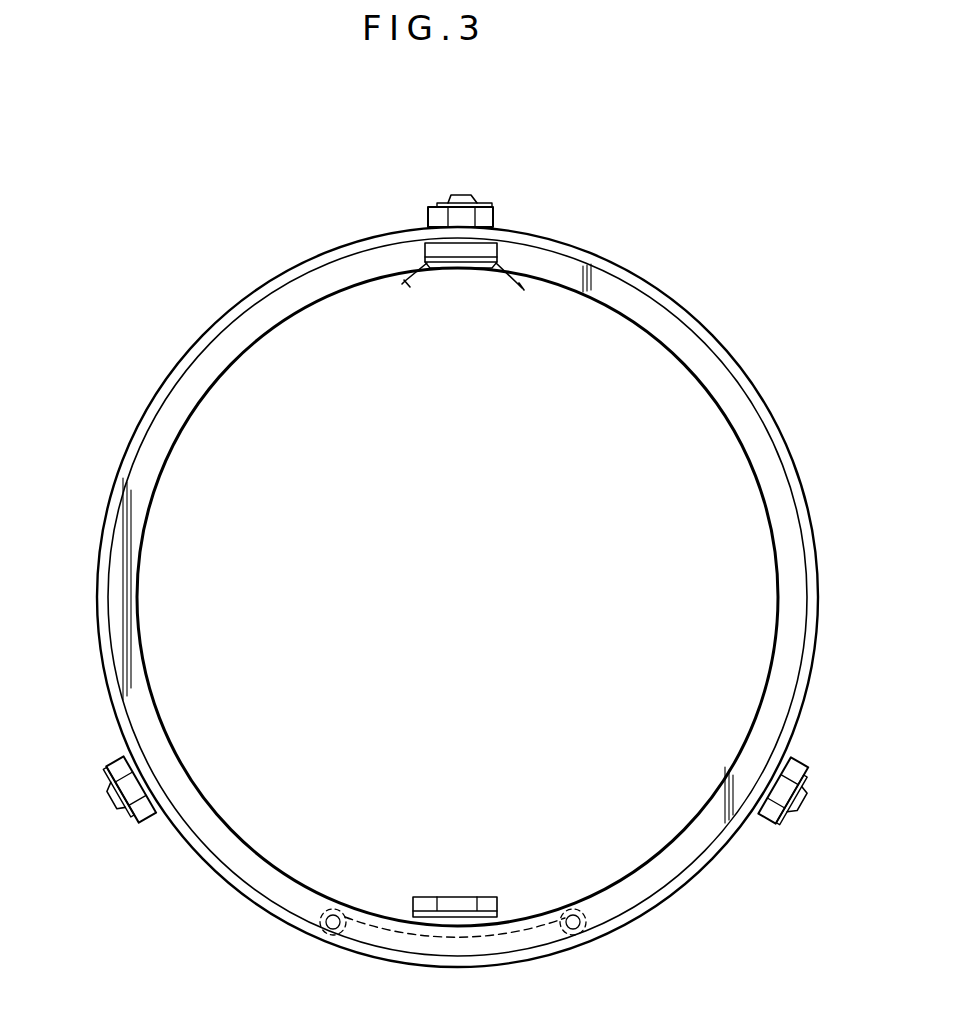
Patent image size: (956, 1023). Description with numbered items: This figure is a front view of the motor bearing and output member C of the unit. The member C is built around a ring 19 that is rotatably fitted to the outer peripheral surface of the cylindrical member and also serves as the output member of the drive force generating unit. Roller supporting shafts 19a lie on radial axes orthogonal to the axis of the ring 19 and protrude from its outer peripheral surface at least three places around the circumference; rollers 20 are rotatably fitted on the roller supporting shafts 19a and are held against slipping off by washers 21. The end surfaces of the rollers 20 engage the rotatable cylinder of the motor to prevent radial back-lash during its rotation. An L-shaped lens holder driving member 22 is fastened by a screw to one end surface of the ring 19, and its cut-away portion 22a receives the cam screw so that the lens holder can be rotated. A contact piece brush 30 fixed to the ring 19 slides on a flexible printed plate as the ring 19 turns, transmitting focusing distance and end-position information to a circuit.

The ring 19 is at (615, 288).
The roller supporting shaft 19a is at (481, 198).
The roller 20 is at (141, 852).
The washer 21 is at (447, 206).
The contact piece brush 30 is at (426, 264).
The lens holder driving member 22 is at (423, 914).
The cut-away portion 22a is at (482, 914).
The motor bearing and output member C is at (457, 614).